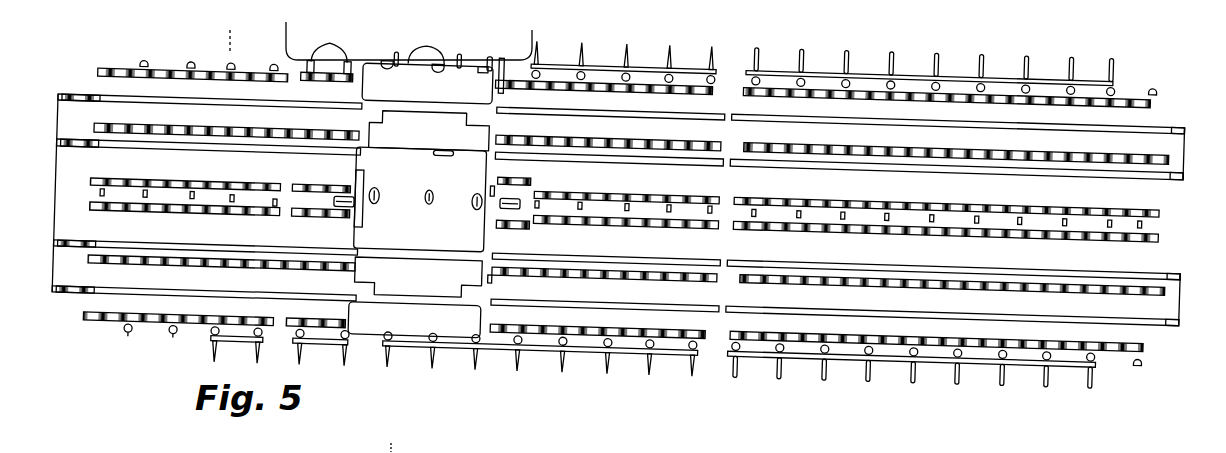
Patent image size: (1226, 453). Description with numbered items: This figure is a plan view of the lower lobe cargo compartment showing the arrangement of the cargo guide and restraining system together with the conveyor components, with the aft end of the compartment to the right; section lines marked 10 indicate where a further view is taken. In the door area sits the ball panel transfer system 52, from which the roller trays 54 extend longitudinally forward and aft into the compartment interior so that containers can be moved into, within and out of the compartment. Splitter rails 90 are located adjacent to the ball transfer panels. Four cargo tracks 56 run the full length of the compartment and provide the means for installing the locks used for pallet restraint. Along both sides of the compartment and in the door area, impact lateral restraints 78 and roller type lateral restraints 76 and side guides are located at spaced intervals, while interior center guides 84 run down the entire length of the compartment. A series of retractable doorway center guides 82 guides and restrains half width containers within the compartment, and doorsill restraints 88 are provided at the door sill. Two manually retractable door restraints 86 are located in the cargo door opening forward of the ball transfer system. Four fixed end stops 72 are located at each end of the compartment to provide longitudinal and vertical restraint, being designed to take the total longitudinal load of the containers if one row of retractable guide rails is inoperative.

The section line 10 is at (356, 57).
The ball panel transfer system 52 is at (434, 89).
The roller trays 54 is at (100, 125).
The cargo tracks 56 is at (272, 140).
The fixed end stops 72 is at (86, 96).
The roller type lateral restraints 76 is at (230, 58).
The impact lateral restraints 78 is at (398, 338).
The retractable doorway center guides 82 is at (380, 194).
The interior center guides 84 is at (278, 194).
The manually retractable door restraints 86 is at (330, 35).
The doorsill restraints 88 is at (425, 36).
The splitter rails 90 is at (340, 200).